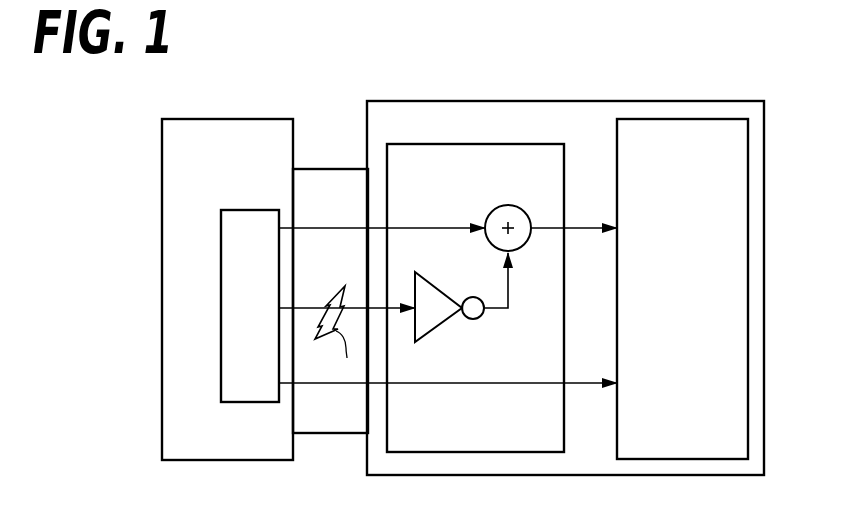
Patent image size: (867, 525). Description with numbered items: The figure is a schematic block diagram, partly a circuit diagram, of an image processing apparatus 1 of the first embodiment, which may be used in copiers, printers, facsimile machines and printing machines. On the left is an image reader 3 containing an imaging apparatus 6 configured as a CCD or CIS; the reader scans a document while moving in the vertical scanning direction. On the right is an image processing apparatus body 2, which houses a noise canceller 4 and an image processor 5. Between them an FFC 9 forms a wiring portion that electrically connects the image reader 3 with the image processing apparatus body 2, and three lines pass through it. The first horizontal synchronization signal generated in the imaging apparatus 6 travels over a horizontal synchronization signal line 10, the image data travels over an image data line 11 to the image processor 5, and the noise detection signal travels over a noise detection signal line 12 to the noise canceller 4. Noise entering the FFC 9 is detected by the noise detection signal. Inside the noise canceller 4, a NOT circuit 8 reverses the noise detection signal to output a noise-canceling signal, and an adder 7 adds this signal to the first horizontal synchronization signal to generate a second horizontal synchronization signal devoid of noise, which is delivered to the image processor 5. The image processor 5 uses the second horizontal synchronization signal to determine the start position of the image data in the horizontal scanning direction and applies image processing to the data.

The image processing apparatus 1 is at (135, 103).
The image processing apparatus body 2 is at (443, 101).
The image reader 3 is at (240, 119).
The noise canceller 4 is at (508, 144).
The image processor 5 is at (687, 119).
The imaging apparatus 6 is at (248, 210).
The adder 7 is at (512, 205).
The NOT circuit 8 is at (443, 329).
The FFC 9 is at (316, 169).
The horizontal synchronization signal line 10 is at (321, 228).
The image data line 11 is at (335, 385).
The noise detection signal line 12 is at (358, 307).